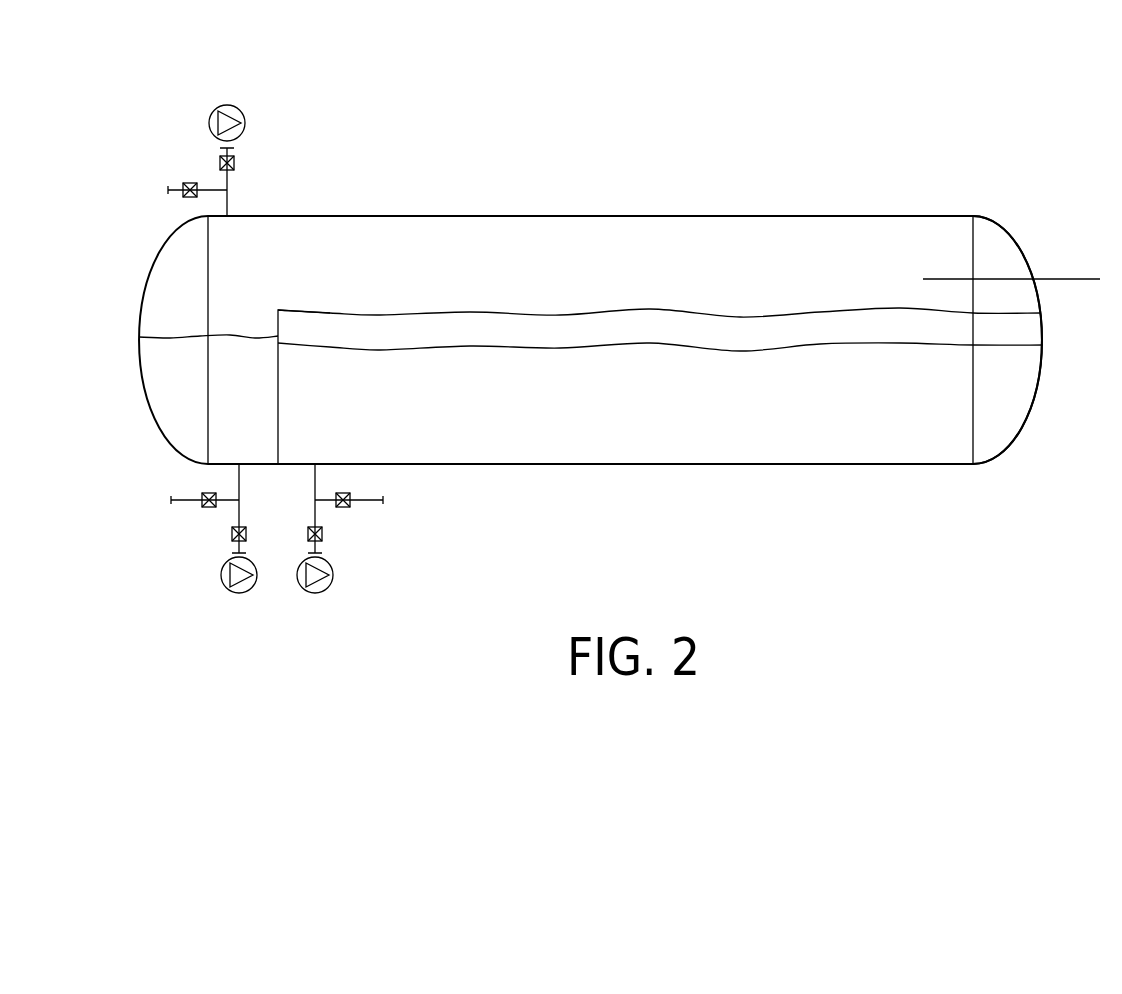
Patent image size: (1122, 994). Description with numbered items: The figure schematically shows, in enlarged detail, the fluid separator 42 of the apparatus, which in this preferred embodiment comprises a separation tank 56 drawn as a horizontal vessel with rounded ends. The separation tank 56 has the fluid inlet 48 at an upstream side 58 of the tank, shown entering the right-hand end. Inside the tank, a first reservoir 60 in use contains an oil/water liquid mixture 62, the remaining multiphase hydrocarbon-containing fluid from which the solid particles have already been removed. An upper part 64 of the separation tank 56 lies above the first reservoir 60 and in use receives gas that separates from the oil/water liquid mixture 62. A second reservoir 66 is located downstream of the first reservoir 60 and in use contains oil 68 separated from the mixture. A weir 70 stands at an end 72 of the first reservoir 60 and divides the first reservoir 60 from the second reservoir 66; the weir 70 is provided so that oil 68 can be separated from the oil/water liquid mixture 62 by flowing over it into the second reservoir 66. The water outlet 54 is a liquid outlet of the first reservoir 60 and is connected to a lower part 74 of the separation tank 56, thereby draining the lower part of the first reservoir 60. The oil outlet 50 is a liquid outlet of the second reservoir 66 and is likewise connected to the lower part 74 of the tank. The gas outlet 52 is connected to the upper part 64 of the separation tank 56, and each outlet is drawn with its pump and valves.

The fluid separator 42 is at (742, 212).
The fluid inlet 48 is at (1061, 278).
The oil outlet 50 is at (239, 593).
The gas outlet 52 is at (227, 103).
The water outlet 54 is at (315, 593).
The separation tank 56 is at (655, 212).
The upstream side 58 is at (838, 212).
The first reservoir 60 is at (518, 365).
The oil/water liquid mixture 62 is at (652, 422).
The upper part 64 is at (470, 265).
The second reservoir 66 is at (237, 375).
The oil 68 is at (227, 415).
The weir 70 is at (276, 363).
The end 72 is at (303, 365).
The lower part 74 is at (476, 443).